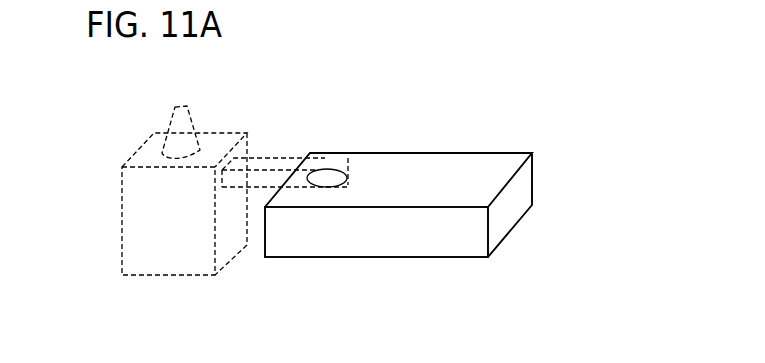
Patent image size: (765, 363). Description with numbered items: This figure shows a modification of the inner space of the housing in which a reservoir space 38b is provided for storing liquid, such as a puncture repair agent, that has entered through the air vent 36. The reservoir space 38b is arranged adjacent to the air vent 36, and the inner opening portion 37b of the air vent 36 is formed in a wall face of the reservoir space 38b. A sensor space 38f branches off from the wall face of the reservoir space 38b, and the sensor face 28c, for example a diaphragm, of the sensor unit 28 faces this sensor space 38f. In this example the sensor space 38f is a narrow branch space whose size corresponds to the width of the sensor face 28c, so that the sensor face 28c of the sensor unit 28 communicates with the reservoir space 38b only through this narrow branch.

The sensor unit 28 is at (515, 201).
The sensor face 28c is at (327, 178).
The sensor space 38f is at (297, 153).
The reservoir space 38b is at (172, 252).
The inner opening portion 37b is at (247, 133).
The air vent 36 is at (196, 130).